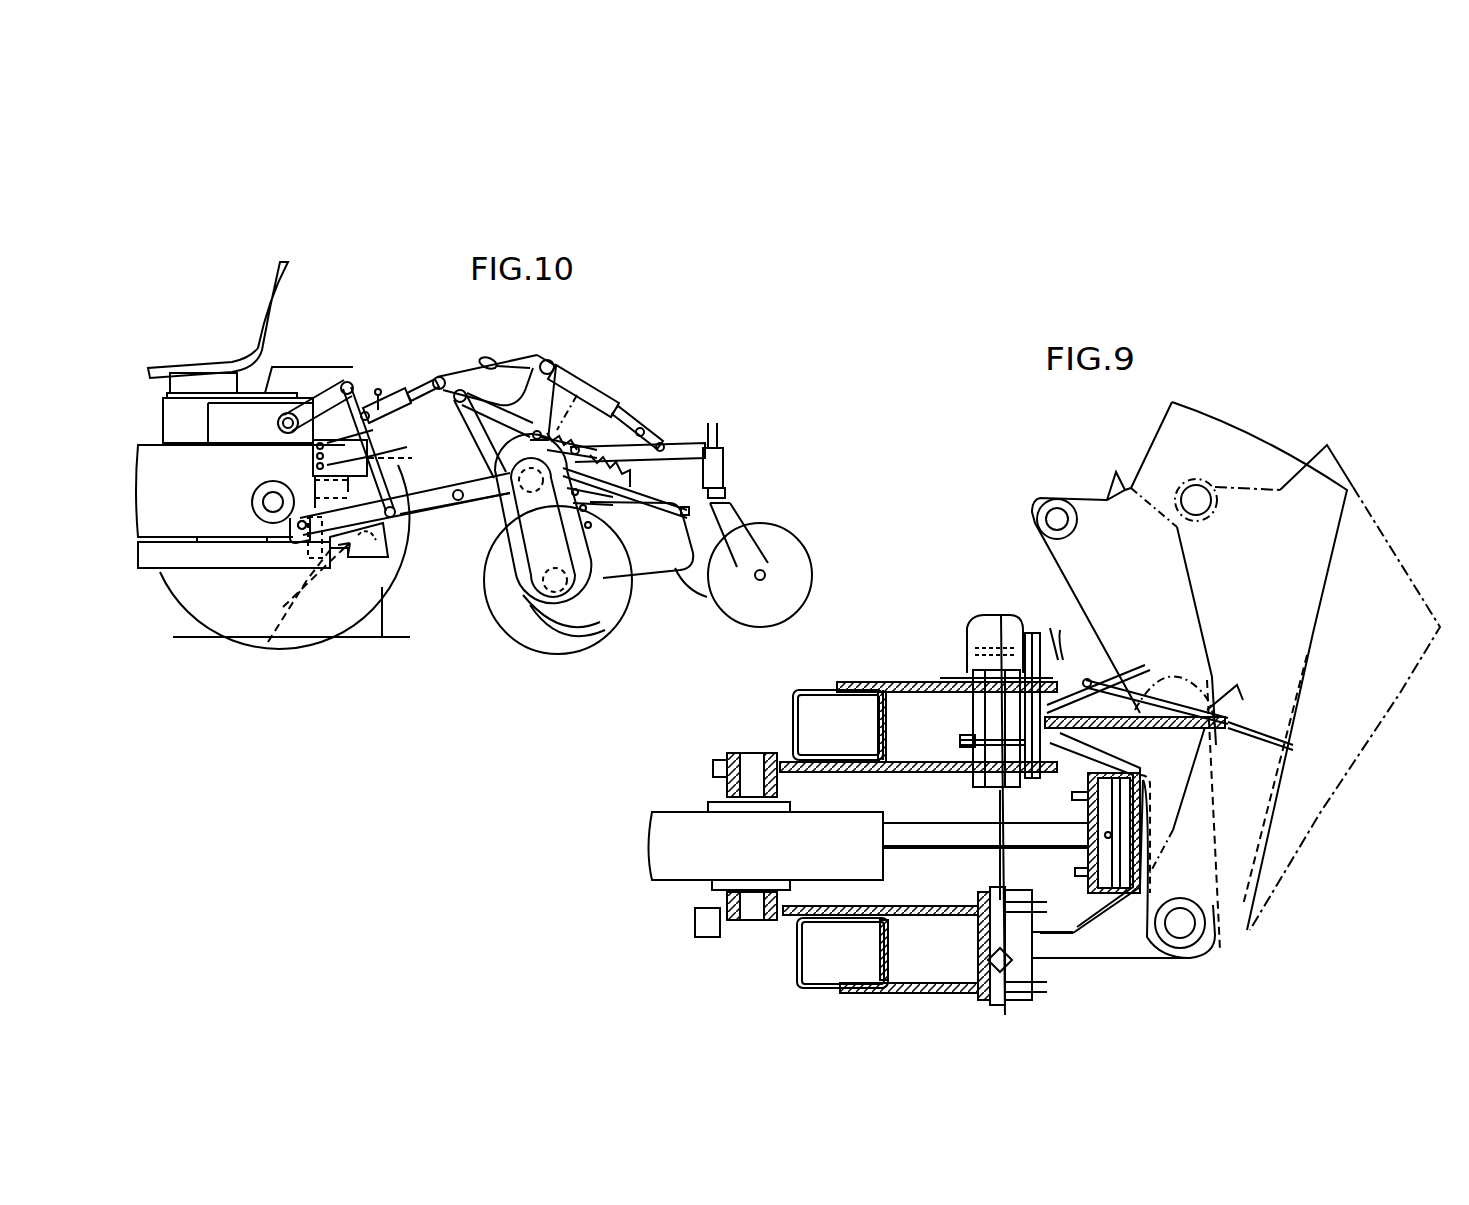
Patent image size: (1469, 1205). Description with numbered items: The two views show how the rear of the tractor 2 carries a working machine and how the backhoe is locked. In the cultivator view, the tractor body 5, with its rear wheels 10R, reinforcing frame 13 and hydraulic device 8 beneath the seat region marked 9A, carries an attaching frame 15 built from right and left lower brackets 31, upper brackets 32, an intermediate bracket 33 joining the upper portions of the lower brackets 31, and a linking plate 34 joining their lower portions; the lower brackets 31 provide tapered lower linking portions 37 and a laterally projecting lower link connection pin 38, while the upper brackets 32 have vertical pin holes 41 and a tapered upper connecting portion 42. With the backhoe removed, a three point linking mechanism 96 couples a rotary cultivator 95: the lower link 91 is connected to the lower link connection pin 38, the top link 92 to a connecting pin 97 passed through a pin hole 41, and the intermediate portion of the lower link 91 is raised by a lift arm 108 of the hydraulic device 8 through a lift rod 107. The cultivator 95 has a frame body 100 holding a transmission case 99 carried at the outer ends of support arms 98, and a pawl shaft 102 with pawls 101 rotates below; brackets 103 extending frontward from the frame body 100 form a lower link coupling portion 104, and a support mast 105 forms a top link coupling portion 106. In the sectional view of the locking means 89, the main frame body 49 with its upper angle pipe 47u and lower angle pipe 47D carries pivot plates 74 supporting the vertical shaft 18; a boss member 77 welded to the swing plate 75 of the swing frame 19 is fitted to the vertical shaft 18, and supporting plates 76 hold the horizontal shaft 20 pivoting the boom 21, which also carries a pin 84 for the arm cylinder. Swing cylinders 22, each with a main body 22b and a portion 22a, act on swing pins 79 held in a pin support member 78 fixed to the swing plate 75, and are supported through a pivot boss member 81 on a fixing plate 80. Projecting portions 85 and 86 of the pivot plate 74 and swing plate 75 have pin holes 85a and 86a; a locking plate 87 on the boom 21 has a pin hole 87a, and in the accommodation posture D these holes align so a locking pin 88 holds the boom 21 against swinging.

In FIG. 10, the tractor 2 is at (304, 302).
In FIG. 10, the seat support 9A is at (201, 330).
In FIG. 10, the hydraulic device 8 is at (210, 420).
In FIG. 10, the reinforcing frame 13 is at (222, 560).
In FIG. 10, the tractor body 5 is at (185, 568).
In FIG. 10, the rear wheels 10R is at (291, 629).
In FIG. 10, the intermediate bracket 33 is at (252, 500).
In FIG. 10, the connecting pin 97 is at (312, 446).
In FIG. 10, the upper bracket 32 is at (328, 452).
In FIG. 10, the upper connecting portion 42 is at (377, 475).
In FIG. 10, the pin holes 41 is at (405, 438).
In FIG. 10, the lift arm 108 is at (322, 395).
In FIG. 10, the lift rod 107 is at (366, 385).
In FIG. 10, the top link 92 is at (392, 400).
In FIG. 10, the three point linking mechanism 96 is at (425, 392).
In FIG. 10, the top link coupling portion 106 is at (443, 378).
In FIG. 10, the support mast 105 is at (512, 390).
In FIG. 10, the lower link coupling portion 104 is at (458, 490).
In FIG. 10, the lower link 91 is at (412, 520).
In FIG. 10, the brackets 103 is at (418, 507).
In FIG. 10, the lower link connection pin 38 is at (295, 535).
In FIG. 10, the lower brackets 31 is at (320, 545).
In FIG. 10, the attaching frame 15 is at (316, 588).
In FIG. 10, the lower linking portions 37 is at (291, 612).
In FIG. 10, the linking plate 34 is at (358, 565).
In FIG. 10, the transmission case 99 is at (510, 570).
In FIG. 10, the pawls 101 is at (592, 640).
In FIG. 10, the pawl shaft 102 is at (540, 630).
In FIG. 10, the frame body 100 is at (500, 545).
In FIG. 10, the support arms 98 is at (590, 395).
In FIG. 10, the rotary cultivator 95 is at (655, 400).
In FIG. 9, the accommodation posture D is at (1250, 424).
In FIG. 9, the boom 21 is at (1116, 472).
In FIG. 9, the pin 84 is at (1057, 508).
In FIG. 9, the locking plate 87 is at (1212, 718).
In FIG. 9, the pin hole 87a is at (1090, 690).
In FIG. 9, the projecting portion 86 is at (1095, 733).
In FIG. 9, the projecting portion 85 is at (1050, 693).
In FIG. 9, the pin hole 85a is at (1050, 693).
In FIG. 9, the locking means 89 is at (1050, 628).
In FIG. 9, the locking pin 88 is at (1033, 595).
In FIG. 9, the upper angle pipe 47u is at (793, 700).
In FIG. 9, the main frame body 49 is at (819, 680).
In FIG. 9, the pivot plates 74 is at (880, 715).
In FIG. 9, the boss member 77 is at (978, 725).
In FIG. 9, the swing pins 79 is at (728, 760).
In FIG. 9, the pivot boss member 81 is at (768, 753).
In FIG. 9, the main body 22b is at (668, 812).
In FIG. 9, the swing cylinder 22 is at (683, 882).
In FIG. 9, the fixing plate 80 is at (810, 905).
In FIG. 9, the shaft portion 22a is at (935, 855).
In FIG. 9, the vertical shaft 18 is at (1003, 785).
In FIG. 9, the pin hole 86a is at (1080, 790).
In FIG. 9, the pin support member 78 is at (1090, 875).
In FIG. 9, the lower angle pipe 47D is at (797, 960).
In FIG. 9, the swing frame 19 is at (1078, 962).
In FIG. 9, the horizontal shaft 20 is at (1178, 923).
In FIG. 9, the swing plate 75 is at (1105, 917).
In FIG. 9, the supporting plates 76 is at (1138, 943).